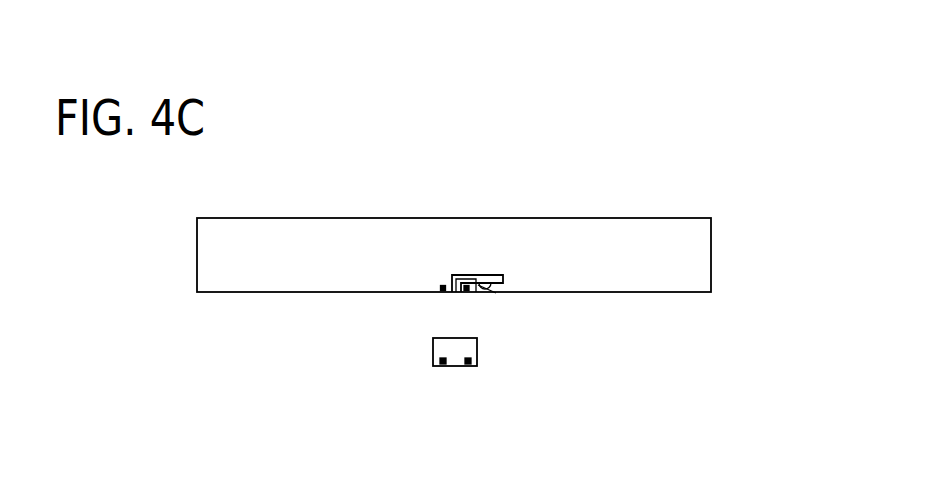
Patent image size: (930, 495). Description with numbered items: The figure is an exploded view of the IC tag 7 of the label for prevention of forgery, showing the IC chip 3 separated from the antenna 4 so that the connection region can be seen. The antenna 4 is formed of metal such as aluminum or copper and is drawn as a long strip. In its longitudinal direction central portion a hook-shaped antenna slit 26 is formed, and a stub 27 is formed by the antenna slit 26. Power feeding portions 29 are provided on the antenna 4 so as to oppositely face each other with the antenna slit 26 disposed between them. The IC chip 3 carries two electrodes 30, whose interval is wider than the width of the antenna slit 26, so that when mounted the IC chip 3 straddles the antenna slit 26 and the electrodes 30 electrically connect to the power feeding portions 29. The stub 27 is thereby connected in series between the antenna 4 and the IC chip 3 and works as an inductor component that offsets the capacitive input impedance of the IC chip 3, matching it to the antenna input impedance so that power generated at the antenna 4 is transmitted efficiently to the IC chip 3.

The IC chip 3 is at (444, 347).
The antenna 4 is at (700, 259).
The IC tag 7 is at (150, 273).
The antenna slit 26 is at (499, 280).
The stub 27 is at (482, 288).
The power feeding portions 29 is at (466, 292).
The electrodes 30 is at (468, 366).